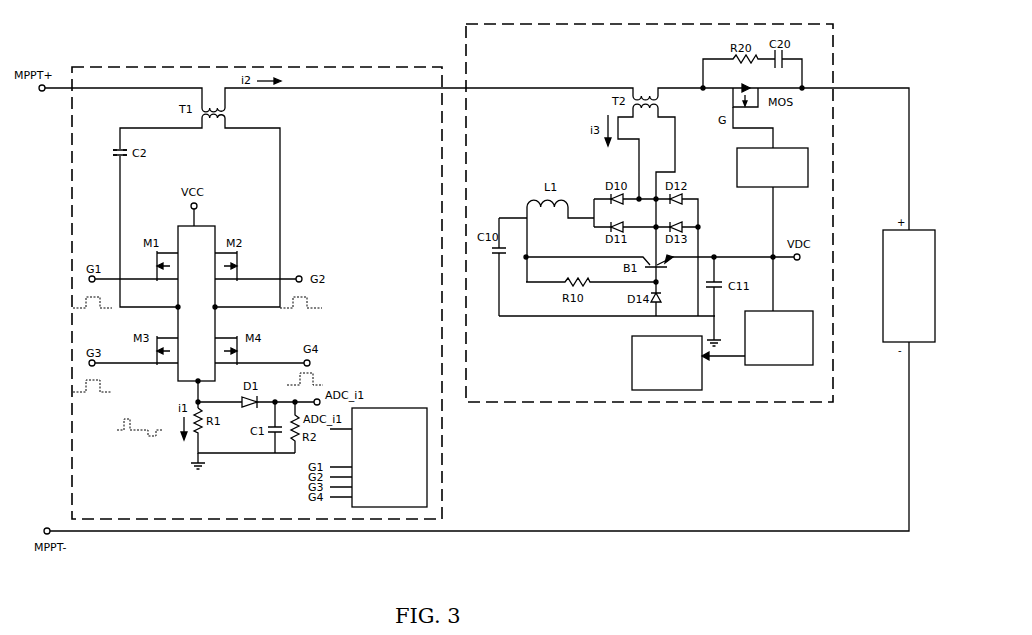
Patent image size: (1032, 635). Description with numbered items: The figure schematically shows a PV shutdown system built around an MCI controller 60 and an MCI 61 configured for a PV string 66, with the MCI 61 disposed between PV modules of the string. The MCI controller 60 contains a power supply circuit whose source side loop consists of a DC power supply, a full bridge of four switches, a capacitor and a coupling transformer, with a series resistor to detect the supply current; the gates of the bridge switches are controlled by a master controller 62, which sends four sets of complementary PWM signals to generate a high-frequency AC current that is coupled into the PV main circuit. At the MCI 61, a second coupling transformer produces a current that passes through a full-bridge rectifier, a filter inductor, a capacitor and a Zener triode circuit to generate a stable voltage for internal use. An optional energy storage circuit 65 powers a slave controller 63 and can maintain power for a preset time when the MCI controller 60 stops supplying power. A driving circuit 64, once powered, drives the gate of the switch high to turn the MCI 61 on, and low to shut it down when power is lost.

The MCI controller 60 is at (230, 67).
The MCI 61 is at (645, 23).
The master controller 62 is at (389, 457).
The slave controller 63 is at (667, 363).
The driving circuit 64 is at (772, 167).
The energy storage circuit 65 is at (779, 338).
The PV string 66 is at (909, 286).